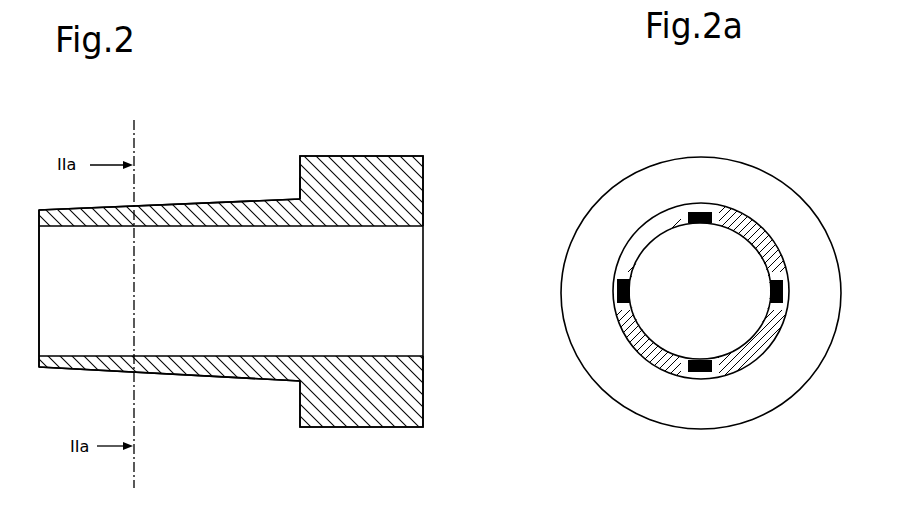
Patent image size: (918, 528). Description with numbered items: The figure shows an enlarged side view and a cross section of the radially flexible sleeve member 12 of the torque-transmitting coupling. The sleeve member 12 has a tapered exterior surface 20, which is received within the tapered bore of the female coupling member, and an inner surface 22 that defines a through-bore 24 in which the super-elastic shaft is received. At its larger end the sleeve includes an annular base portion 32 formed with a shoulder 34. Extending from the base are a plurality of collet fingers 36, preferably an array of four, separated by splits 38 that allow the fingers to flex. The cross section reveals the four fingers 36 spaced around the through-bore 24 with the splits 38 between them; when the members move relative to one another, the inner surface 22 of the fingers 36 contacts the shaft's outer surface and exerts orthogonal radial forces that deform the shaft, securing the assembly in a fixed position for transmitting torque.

In FIG. 2, the sleeve member 12 is at (405, 136).
In FIG. 2a, the sleeve member 12 is at (720, 138).
In FIG. 2, the tapered exterior surface 20 is at (237, 381).
In FIG. 2, the inner surface 22 is at (232, 238).
In FIG. 2a, the inner surface 22 is at (764, 250).
In FIG. 2, the through-bore 24 is at (387, 275).
In FIG. 2a, the through-bore 24 is at (672, 318).
In FIG. 2, the annular base portion 32 is at (357, 172).
In FIG. 2, the shoulder 34 is at (298, 178).
In FIG. 2a, the shoulder 34 is at (628, 198).
In FIG. 2a, the collet fingers 36 is at (611, 292).
In FIG. 2a, the splits 38 is at (697, 210).